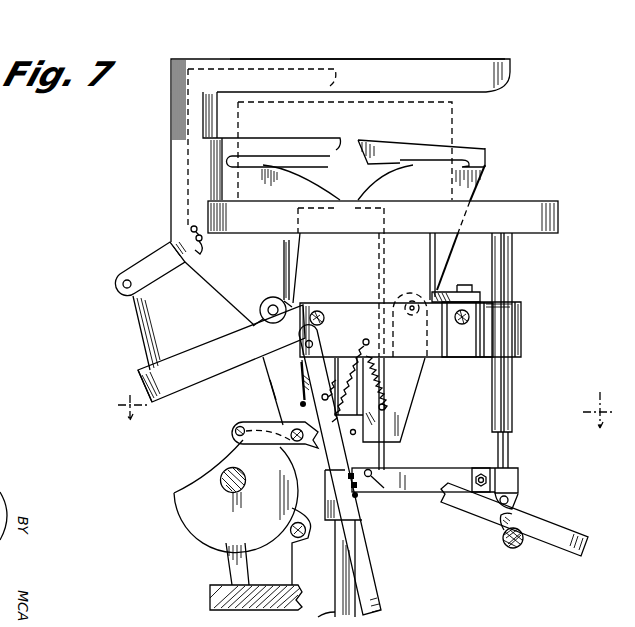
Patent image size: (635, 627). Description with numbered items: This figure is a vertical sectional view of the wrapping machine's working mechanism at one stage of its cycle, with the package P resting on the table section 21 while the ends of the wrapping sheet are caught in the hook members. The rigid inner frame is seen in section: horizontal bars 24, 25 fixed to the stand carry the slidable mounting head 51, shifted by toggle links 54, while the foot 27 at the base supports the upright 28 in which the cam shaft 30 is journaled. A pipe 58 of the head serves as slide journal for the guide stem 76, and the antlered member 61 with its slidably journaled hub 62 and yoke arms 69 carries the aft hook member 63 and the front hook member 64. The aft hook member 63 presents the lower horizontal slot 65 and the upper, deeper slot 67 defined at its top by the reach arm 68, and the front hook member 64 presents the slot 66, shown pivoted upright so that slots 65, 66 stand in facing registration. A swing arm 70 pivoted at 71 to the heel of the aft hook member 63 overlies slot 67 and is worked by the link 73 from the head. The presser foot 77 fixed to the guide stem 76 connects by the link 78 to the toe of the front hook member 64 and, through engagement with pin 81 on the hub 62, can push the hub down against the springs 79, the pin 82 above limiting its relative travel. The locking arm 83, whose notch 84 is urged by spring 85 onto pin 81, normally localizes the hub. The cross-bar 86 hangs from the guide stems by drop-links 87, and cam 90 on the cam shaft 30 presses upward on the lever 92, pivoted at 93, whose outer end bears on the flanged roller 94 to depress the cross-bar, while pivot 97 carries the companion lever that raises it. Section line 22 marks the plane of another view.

The table section 21 is at (520, 208).
The section line 22 is at (361, 410).
The horizontal bar 24 is at (461, 329).
The horizontal bar 25 is at (325, 318).
The foot 27 is at (260, 612).
The upright 28 is at (240, 567).
The cam shaft 30 is at (226, 476).
The mounting head 51 is at (500, 335).
The toggle link 54 is at (440, 292).
The pipe 58 is at (517, 386).
The antlered member 61 is at (268, 412).
The hub 62 is at (358, 458).
The aft hook member 63 is at (163, 193).
The front hook member 64 is at (491, 165).
The horizontal slot 65 is at (266, 163).
The horizontal slot 66 is at (400, 163).
The second horizontal slot 67 is at (362, 93).
The reach arm 68 is at (447, 68).
The arm 69 is at (282, 382).
The swing arm 70 is at (270, 66).
The pivot 71 is at (205, 248).
The link 73 is at (140, 320).
The guide stem 76 is at (505, 457).
The presser foot 77 is at (440, 471).
The link 78 is at (386, 402).
The spring 79 is at (372, 363).
The pin 81 is at (360, 497).
The pin 82 is at (349, 396).
The locking arm 83 is at (366, 578).
The notch 84 is at (340, 498).
The spring 85 is at (358, 353).
The cross-bar 86 is at (507, 549).
The drop-link 87 is at (515, 505).
The cam 90 is at (205, 520).
The lever 92 is at (578, 540).
The pivot 93 is at (282, 441).
The flanged roller 94 is at (500, 540).
The pivot 97 is at (303, 546).
The package P is at (460, 126).